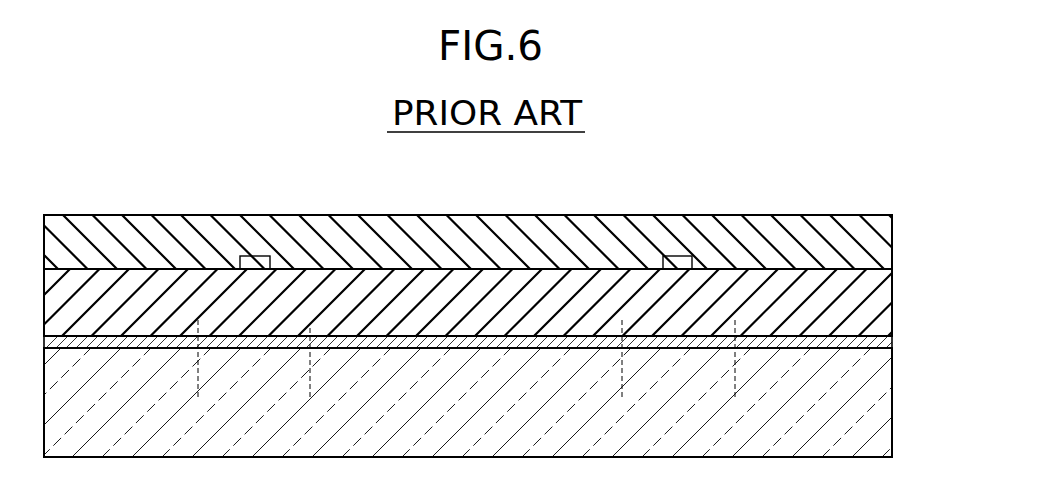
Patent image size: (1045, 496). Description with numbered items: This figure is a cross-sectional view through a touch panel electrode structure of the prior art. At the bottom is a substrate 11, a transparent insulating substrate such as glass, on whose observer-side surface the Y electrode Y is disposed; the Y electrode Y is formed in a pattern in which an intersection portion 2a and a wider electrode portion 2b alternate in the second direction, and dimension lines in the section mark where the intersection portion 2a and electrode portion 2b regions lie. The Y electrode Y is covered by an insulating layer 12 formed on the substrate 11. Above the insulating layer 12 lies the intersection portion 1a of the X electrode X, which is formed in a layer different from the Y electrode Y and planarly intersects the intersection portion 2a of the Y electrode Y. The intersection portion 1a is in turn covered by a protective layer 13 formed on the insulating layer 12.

The protective layer 13 is at (877, 237).
The insulating layer 12 is at (877, 283).
The substrate 11 is at (885, 412).
The Y electrode Y is at (877, 342).
The X electrode X is at (457, 220).
The intersection portion 1a is at (258, 260).
The intersection portion 2a is at (735, 388).
The electrode portion 2b is at (903, 388).